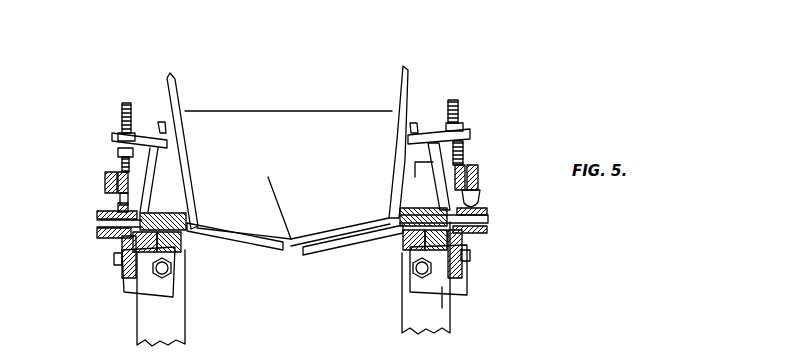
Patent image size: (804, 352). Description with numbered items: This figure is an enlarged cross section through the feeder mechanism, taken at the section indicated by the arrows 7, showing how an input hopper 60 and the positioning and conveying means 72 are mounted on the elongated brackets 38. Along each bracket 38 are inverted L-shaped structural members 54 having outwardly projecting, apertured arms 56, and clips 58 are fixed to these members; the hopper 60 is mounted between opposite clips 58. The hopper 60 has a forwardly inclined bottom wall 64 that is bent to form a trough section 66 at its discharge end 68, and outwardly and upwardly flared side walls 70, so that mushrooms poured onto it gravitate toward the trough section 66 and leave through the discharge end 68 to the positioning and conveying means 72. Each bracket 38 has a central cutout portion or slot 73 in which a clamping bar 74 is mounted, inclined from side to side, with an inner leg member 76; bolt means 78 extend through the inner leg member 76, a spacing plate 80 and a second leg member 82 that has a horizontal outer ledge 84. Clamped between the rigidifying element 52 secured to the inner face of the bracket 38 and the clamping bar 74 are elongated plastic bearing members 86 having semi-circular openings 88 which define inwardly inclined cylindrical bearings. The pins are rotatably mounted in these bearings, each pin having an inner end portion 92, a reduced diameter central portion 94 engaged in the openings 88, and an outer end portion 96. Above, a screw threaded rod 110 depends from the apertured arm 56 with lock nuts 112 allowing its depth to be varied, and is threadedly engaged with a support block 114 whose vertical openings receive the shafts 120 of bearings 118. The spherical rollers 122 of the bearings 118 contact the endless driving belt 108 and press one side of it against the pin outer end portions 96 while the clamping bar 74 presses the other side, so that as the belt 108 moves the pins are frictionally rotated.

The section line for FIG. 7 is at (452, 156).
The elongated bracket 38 is at (137, 198).
The elongated rigidifying element 52 is at (174, 204).
The structural member 54 is at (157, 183).
The apertured arm 56 is at (126, 155).
The clip 58 is at (163, 129).
The input hopper 60 is at (262, 108).
The bottom wall 64 is at (343, 138).
The trough section 66 is at (292, 223).
The discharge end 68 is at (340, 248).
The side wall 70 is at (395, 88).
The positioning and conveying means 72 is at (238, 256).
The central cutout portion or slot 73 is at (133, 237).
The clamping bar 74 is at (173, 257).
The inner leg member 76 is at (135, 282).
The bolt means 78 is at (470, 257).
The spacing plate 80 is at (473, 262).
The second leg member 82 is at (468, 240).
The horizontal outer ledge 84 is at (490, 222).
The bearing member 86 is at (470, 190).
The opening 88 is at (138, 240).
The inner end portion 92 is at (266, 254).
The reduced diameter central portion 94 is at (193, 223).
The outer end portion 96 is at (97, 229).
The endless driving belt 108 is at (482, 211).
The screw threaded rod 110 is at (458, 107).
The lock nut 112 is at (467, 123).
The support block 114 is at (470, 165).
The bearing 118 is at (466, 203).
The shaft 120 is at (479, 172).
The spherical roller 122 is at (110, 206).